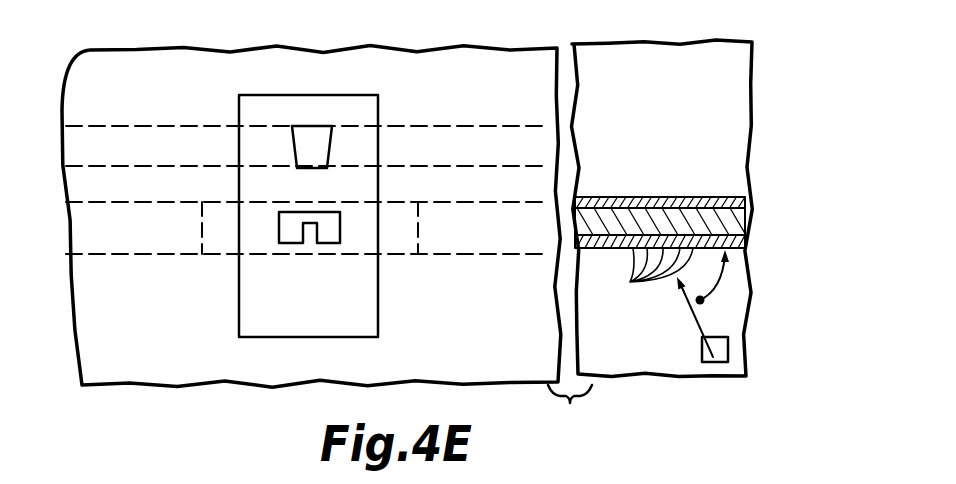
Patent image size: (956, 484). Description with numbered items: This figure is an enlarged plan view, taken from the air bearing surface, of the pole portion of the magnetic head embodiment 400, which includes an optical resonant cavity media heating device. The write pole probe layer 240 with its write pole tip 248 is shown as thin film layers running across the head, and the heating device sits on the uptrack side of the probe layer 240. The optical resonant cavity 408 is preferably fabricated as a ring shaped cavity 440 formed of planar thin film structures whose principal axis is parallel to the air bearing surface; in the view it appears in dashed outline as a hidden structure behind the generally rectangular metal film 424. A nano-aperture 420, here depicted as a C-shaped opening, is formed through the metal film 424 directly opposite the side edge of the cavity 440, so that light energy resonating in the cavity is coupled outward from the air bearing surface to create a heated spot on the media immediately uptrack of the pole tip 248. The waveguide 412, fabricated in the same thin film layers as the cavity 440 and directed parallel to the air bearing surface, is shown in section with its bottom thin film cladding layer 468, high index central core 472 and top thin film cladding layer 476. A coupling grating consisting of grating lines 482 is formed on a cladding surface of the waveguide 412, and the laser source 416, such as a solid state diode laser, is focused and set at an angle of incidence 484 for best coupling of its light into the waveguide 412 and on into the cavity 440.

The magnetic head embodiment 400 is at (160, 45).
The write pole probe layer 240 is at (414, 125).
The write pole tip 248 is at (345, 82).
The metal film 424 is at (358, 320).
The nano-aperture 420 is at (317, 243).
The ring shaped cavity 440 is at (252, 254).
The optical resonant cavity 408 is at (200, 227).
The waveguide 412 is at (458, 254).
The top thin film cladding layer 476 is at (745, 200).
The central core 472 is at (745, 218).
The bottom thin film cladding layer 468 is at (745, 240).
The grating lines 482 is at (646, 282).
The angle of incidence 484 is at (720, 283).
The laser source 416 is at (728, 350).